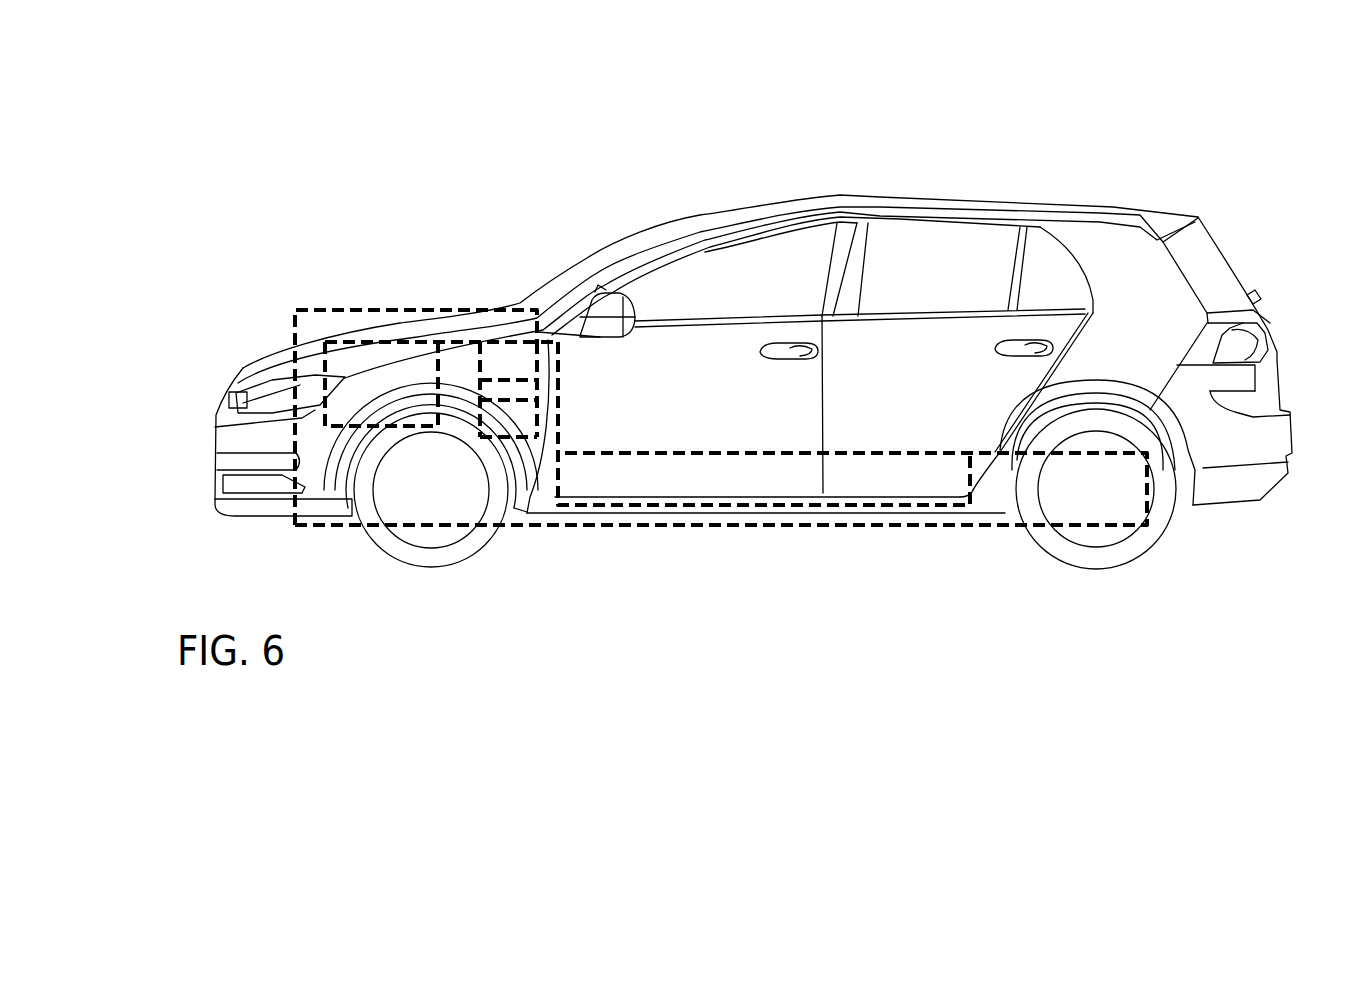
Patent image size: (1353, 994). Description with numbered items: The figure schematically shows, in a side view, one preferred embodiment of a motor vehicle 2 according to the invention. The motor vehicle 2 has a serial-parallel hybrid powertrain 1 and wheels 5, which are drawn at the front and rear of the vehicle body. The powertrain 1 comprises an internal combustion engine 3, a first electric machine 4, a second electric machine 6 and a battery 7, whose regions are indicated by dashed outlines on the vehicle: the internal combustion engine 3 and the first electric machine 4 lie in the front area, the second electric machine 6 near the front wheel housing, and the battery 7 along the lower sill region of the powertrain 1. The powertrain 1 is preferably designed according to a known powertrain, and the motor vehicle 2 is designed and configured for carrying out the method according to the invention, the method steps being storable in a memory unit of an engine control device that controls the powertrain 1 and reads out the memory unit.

The serial-parallel hybrid powertrain 1 is at (707, 526).
The motor vehicle 2 is at (648, 172).
The internal combustion engine 3 is at (352, 341).
The first electric machine 4 is at (503, 341).
The wheels 5 is at (424, 494).
The second electric machine 6 is at (512, 438).
The battery 7 is at (845, 505).